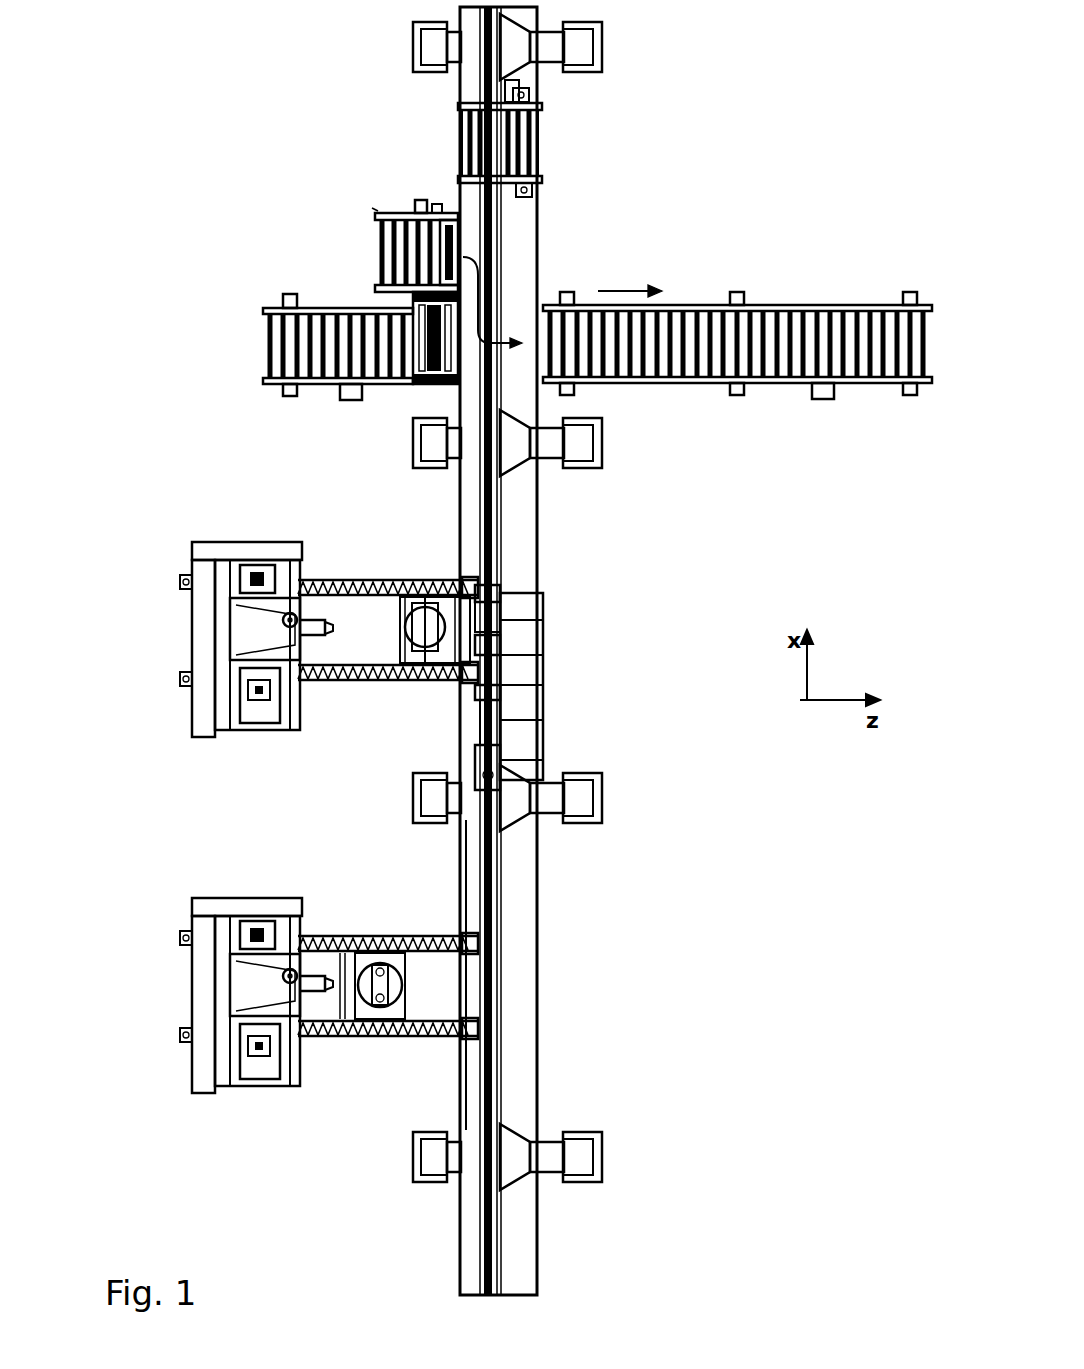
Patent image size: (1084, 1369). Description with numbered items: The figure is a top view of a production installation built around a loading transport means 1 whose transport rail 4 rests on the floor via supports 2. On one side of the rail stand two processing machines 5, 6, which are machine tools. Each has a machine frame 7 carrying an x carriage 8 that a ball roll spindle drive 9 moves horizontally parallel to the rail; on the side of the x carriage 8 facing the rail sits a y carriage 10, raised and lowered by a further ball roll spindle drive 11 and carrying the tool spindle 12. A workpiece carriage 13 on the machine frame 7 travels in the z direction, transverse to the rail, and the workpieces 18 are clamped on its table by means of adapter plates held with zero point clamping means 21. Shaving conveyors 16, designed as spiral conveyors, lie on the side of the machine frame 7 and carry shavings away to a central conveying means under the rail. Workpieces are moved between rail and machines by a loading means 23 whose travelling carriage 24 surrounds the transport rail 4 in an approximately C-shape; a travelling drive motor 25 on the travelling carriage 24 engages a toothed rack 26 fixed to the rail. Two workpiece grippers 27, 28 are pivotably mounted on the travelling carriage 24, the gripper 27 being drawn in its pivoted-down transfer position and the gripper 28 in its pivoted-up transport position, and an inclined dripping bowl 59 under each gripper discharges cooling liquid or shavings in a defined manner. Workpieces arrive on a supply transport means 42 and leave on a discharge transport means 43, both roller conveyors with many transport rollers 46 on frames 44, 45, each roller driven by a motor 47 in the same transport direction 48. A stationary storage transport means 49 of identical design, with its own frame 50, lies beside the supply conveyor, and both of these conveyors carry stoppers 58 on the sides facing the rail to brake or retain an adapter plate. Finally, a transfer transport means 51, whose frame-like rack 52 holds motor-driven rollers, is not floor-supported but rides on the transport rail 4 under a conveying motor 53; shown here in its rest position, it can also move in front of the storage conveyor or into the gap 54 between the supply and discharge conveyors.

The loading transport means 1 is at (548, 200).
The supports 2 is at (580, 440).
The transport rail 4 is at (468, 75).
The processing machine 5 is at (270, 598).
The processing machine 6 is at (254, 961).
The machine frame 7 is at (195, 548).
The x carriage 8 is at (236, 628).
The ball roll spindle drive 9 is at (215, 690).
The y carriage 10 is at (280, 648).
The ball roll spindle drive 11 is at (283, 616).
The tool spindle 12 is at (292, 560).
The workpiece carriage 13 is at (405, 682).
The shaving conveyors 16 is at (348, 682).
The workpiece 18 is at (420, 575).
The zero point clamping means 21 is at (382, 960).
The loading means 23 is at (573, 683).
The travelling carriage 24 is at (505, 595).
The travelling drive motor 25 is at (505, 770).
The toothed rack 26 is at (500, 920).
The workpiece gripper 27 is at (500, 622).
The workpiece gripper 28 is at (525, 715).
The supply transport means 42 is at (255, 322).
The discharge transport means 43 is at (737, 302).
The frame 44 is at (262, 381).
The frame 45 is at (875, 305).
The transport rollers 46 is at (718, 345).
The motor 47 is at (515, 95).
The transport direction 48 is at (612, 285).
The storage transport means 49 is at (349, 229).
The frame 50 is at (378, 258).
The transfer transport means 51 is at (557, 152).
The frame-like rack 52 is at (530, 155).
The conveying motor 53 is at (535, 190).
The gap 54 is at (515, 315).
The stoppers 58 is at (372, 208).
The dripping bowl 59 is at (540, 648).